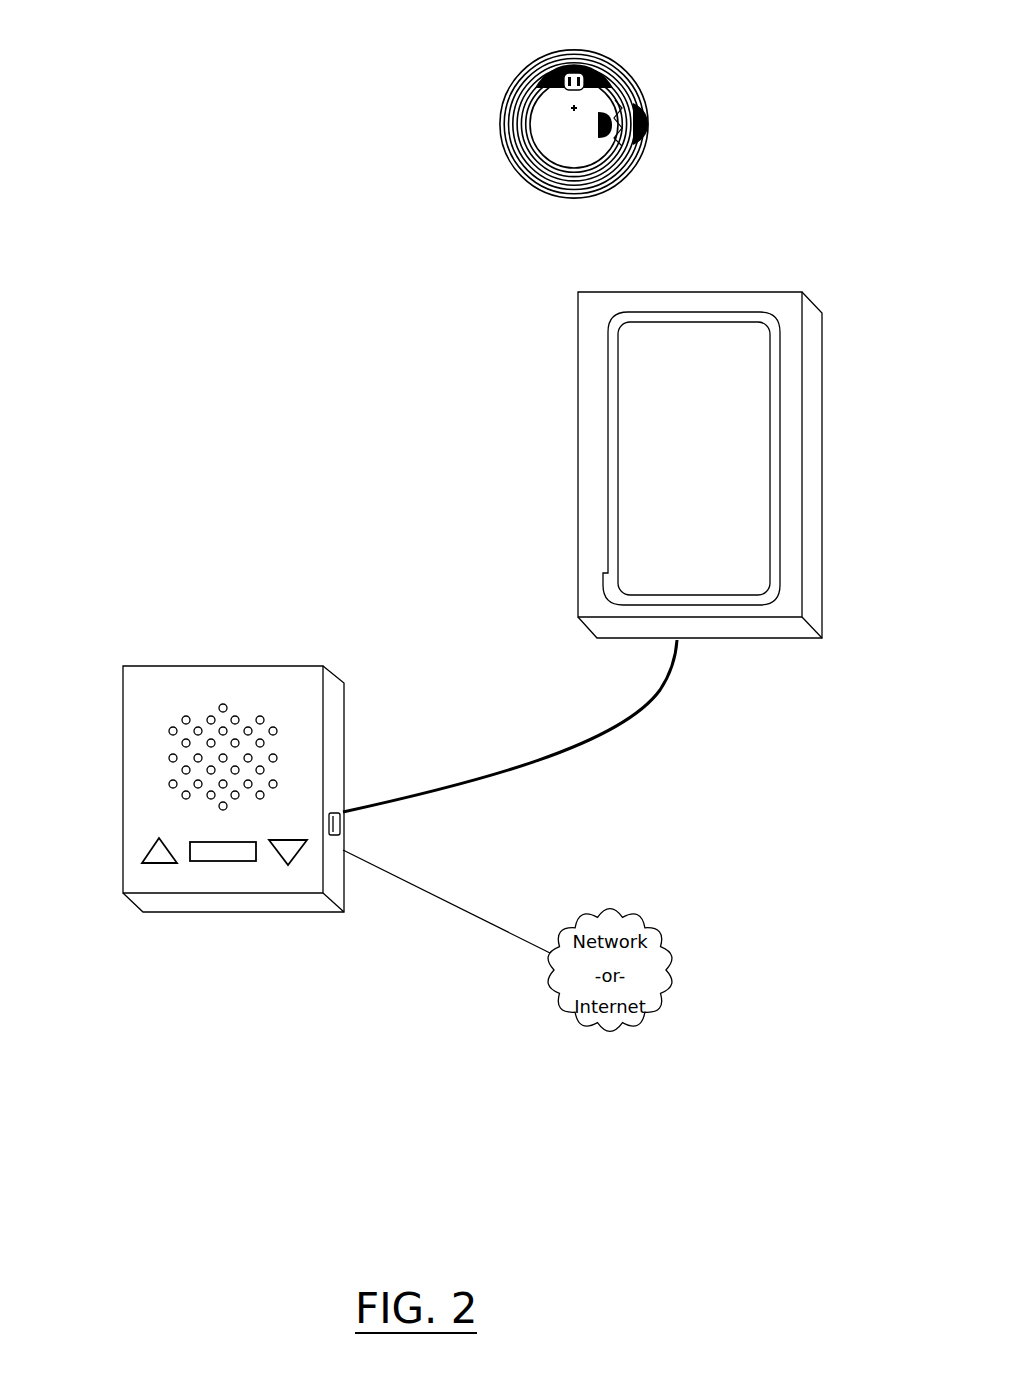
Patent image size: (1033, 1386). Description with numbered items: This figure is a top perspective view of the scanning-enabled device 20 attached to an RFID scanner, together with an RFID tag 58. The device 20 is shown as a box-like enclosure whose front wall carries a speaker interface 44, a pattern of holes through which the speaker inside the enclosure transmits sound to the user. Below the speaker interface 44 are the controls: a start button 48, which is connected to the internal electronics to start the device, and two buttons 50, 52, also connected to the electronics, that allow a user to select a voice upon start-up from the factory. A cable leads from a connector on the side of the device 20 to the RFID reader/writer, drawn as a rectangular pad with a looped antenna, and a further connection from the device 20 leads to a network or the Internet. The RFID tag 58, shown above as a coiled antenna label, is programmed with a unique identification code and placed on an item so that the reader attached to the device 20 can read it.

The device 20 is at (135, 665).
The speaker interface 44 is at (261, 713).
The start button 48 is at (207, 862).
The button 50 is at (150, 853).
The button 52 is at (288, 865).
The RFID tag 58 is at (500, 108).